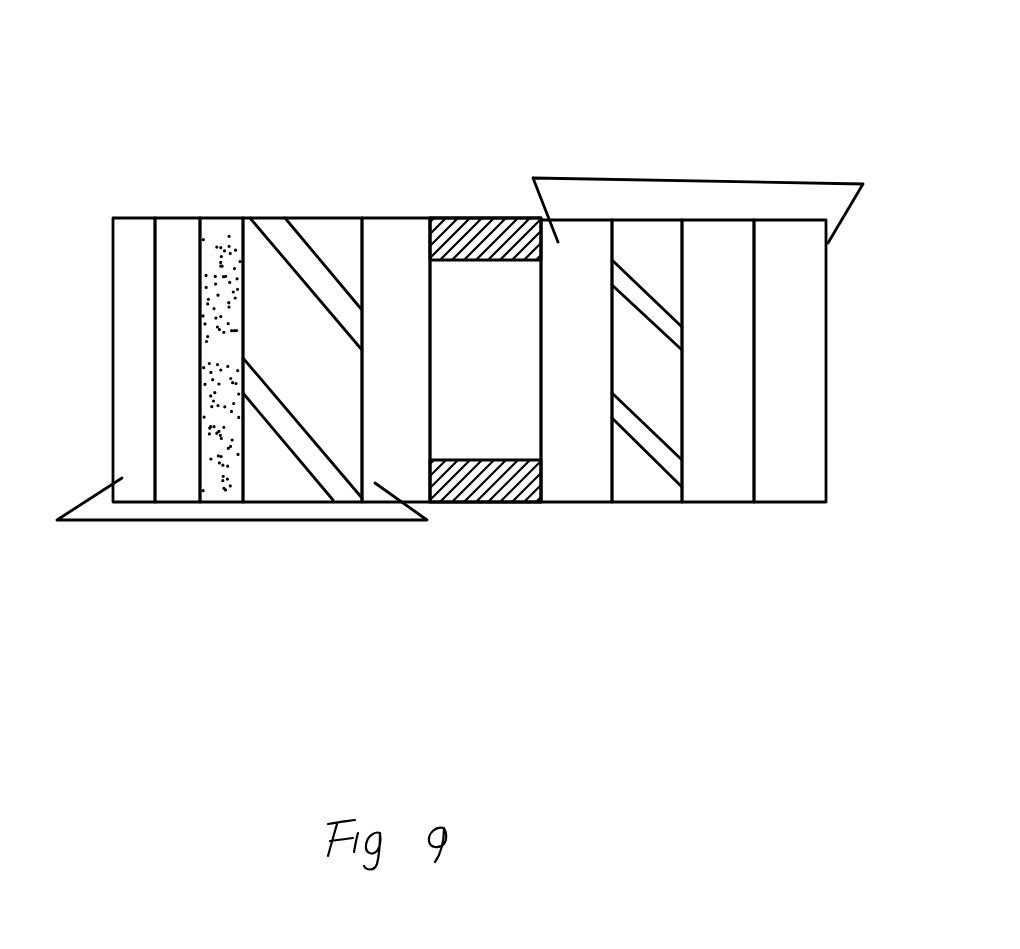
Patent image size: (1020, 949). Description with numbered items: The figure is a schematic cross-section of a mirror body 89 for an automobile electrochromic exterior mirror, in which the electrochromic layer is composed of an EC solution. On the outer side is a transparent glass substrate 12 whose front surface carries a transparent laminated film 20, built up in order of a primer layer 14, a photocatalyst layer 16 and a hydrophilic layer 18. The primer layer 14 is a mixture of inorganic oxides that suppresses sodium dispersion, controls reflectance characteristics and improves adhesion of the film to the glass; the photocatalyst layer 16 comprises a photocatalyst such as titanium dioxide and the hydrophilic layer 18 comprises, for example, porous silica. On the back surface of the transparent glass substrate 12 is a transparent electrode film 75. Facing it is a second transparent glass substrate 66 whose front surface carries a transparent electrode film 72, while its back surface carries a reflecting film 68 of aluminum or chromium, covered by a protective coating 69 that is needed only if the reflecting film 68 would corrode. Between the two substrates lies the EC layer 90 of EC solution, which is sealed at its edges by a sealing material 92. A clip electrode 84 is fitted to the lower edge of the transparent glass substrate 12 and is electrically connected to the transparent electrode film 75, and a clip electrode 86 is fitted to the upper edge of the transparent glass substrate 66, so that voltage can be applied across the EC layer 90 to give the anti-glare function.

The transparent glass substrate 12 is at (315, 237).
The primer layer 14 is at (220, 235).
The photocatalyst layer 16 is at (180, 235).
The hydrophilic layer 18 is at (138, 237).
The transparent laminated film 20 is at (113, 543).
The transparent glass substrate 66 is at (640, 495).
The reflecting film 68 is at (715, 495).
The protective coating 69 is at (795, 500).
The transparent electrode film 72 is at (572, 495).
The transparent electrode film 75 is at (388, 238).
The clip electrode 84 is at (343, 522).
The clip electrode 86 is at (648, 180).
The mirror body for automobile EC exterior mirror 89 is at (685, 66).
The EC layer 90 is at (475, 297).
The sealing material 92 is at (480, 505).